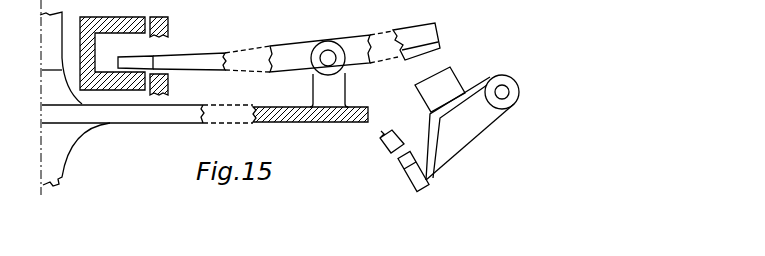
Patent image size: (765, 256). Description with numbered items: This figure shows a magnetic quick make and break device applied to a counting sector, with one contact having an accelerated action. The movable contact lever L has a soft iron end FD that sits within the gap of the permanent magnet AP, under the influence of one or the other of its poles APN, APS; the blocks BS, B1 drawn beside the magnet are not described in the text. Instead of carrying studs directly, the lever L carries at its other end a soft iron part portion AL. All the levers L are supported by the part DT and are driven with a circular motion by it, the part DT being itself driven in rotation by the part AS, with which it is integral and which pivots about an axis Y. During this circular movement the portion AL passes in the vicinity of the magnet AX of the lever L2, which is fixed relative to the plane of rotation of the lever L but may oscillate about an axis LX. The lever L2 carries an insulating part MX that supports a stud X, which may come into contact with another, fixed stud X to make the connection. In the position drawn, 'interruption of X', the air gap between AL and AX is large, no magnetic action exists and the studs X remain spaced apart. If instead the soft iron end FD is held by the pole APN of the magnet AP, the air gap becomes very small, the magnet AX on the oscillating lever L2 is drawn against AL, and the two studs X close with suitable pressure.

The permanent magnet AP is at (84, 33).
The pole of the permanent magnet APN is at (128, 25).
The pole of the permanent magnet APS is at (118, 80).
The upper bearing BS is at (170, 25).
The lower bearing B1 is at (170, 85).
The soft iron end FD is at (141, 62).
The movable contact lever L is at (298, 51).
The soft iron part portion AL is at (432, 46).
The supporting part DT is at (296, 110).
The magnet AX is at (448, 90).
The axis LX is at (503, 88).
The lever L2 is at (465, 128).
The insulating part MX is at (432, 176).
The stud X is at (398, 167).
The axis Y is at (42, 140).
The rotating part AS is at (48, 162).